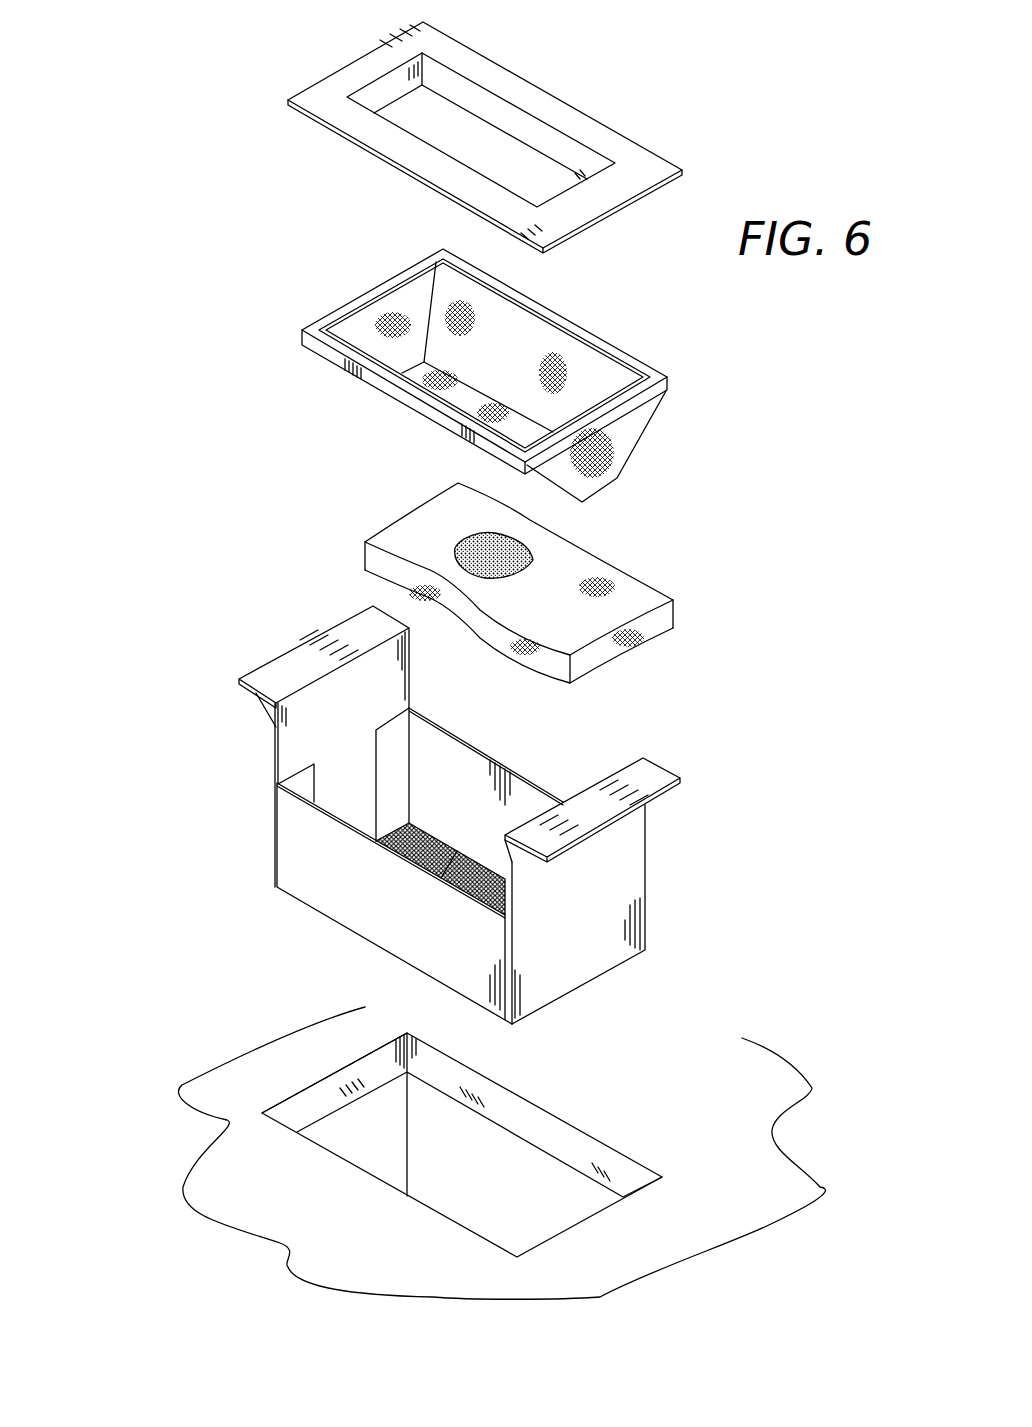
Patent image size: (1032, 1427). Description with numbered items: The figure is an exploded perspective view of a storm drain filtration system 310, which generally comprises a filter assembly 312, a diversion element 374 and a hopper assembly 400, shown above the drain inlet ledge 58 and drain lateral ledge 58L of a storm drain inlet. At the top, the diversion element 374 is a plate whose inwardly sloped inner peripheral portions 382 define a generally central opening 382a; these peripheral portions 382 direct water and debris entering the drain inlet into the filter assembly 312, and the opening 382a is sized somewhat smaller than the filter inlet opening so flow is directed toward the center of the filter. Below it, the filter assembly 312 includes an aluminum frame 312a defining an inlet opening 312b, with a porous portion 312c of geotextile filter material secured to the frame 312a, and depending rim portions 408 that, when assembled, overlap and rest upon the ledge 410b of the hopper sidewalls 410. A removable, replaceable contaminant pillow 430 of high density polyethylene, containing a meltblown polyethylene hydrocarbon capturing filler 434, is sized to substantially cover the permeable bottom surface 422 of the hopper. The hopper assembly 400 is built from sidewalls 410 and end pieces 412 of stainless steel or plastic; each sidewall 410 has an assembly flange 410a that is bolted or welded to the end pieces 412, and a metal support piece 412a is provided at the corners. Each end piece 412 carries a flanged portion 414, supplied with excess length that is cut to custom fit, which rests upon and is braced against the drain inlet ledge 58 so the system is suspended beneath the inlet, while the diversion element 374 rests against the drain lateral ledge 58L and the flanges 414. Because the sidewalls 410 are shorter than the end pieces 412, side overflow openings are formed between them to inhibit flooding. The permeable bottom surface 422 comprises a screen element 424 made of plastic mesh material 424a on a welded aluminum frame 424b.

The diversion element 374 is at (655, 148).
The inner peripheral portions 382 is at (516, 119).
The opening 382a is at (480, 153).
The system 310 is at (759, 386).
The filter assembly 312 is at (666, 490).
The frame 312a is at (337, 308).
The inlet opening 312b is at (548, 340).
The porous portion 312c is at (622, 427).
The rim portions 408 is at (667, 380).
The contaminant pillow 430 is at (620, 588).
The hydrocarbon capturing filler 434 is at (477, 550).
The hopper assembly 400 is at (655, 848).
The sidewalls 410 is at (505, 777).
The assembly flange 410a is at (388, 753).
The ledge 410b is at (468, 737).
The end pieces 412 is at (300, 748).
The metal support piece 412a is at (256, 712).
The flanged portion 414 is at (293, 653).
The permeable bottom surface 422 is at (440, 845).
The screen element 424 is at (462, 877).
The plastic mesh material 424a is at (413, 842).
The welded aluminum frame 424b is at (471, 862).
The drain inlet ledge 58 is at (320, 1110).
The drain lateral ledge 58L is at (560, 1145).